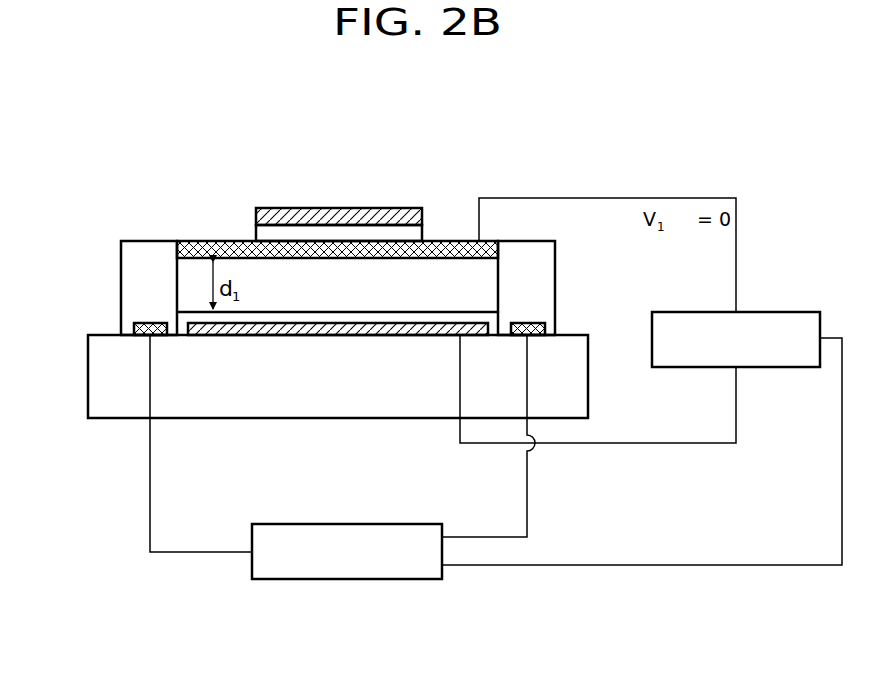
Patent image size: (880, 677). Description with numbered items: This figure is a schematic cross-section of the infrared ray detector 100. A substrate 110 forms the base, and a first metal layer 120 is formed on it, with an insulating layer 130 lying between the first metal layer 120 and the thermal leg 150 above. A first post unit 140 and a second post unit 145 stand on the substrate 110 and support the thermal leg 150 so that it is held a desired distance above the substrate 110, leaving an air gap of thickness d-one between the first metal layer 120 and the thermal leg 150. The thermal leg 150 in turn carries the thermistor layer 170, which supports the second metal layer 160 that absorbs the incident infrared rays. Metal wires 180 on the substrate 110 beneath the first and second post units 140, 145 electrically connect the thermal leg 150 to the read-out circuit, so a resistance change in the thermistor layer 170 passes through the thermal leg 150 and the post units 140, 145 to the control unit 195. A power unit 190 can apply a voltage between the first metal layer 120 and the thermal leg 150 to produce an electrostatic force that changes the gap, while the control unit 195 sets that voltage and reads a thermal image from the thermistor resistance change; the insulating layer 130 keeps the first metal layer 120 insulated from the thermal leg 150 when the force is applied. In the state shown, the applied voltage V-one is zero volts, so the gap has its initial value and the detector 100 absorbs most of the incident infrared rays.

The infrared ray detector 100 is at (88, 160).
The substrate 110 is at (95, 377).
The first metal layer 120 is at (337, 337).
The insulating layer 130 is at (182, 318).
The first post unit 140 is at (122, 255).
The second post unit 145 is at (546, 266).
The thermal leg 150 is at (446, 241).
The second metal layer 160 is at (255, 209).
The thermistor layer 170 is at (257, 233).
The metal wires 180 is at (540, 324).
The power unit 190 is at (794, 312).
The control unit 195 is at (347, 580).